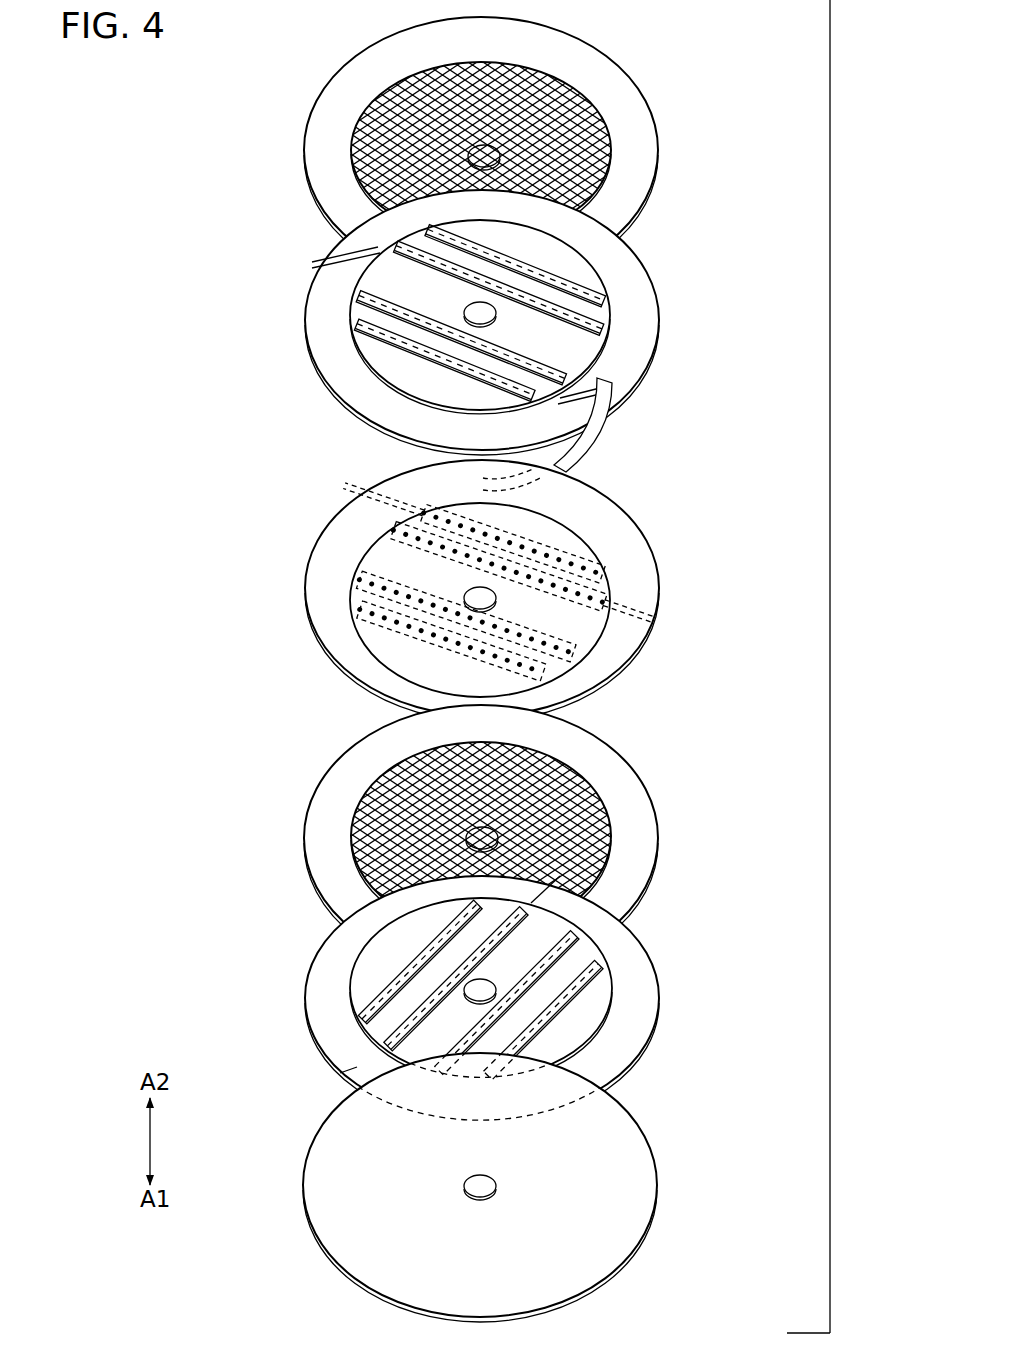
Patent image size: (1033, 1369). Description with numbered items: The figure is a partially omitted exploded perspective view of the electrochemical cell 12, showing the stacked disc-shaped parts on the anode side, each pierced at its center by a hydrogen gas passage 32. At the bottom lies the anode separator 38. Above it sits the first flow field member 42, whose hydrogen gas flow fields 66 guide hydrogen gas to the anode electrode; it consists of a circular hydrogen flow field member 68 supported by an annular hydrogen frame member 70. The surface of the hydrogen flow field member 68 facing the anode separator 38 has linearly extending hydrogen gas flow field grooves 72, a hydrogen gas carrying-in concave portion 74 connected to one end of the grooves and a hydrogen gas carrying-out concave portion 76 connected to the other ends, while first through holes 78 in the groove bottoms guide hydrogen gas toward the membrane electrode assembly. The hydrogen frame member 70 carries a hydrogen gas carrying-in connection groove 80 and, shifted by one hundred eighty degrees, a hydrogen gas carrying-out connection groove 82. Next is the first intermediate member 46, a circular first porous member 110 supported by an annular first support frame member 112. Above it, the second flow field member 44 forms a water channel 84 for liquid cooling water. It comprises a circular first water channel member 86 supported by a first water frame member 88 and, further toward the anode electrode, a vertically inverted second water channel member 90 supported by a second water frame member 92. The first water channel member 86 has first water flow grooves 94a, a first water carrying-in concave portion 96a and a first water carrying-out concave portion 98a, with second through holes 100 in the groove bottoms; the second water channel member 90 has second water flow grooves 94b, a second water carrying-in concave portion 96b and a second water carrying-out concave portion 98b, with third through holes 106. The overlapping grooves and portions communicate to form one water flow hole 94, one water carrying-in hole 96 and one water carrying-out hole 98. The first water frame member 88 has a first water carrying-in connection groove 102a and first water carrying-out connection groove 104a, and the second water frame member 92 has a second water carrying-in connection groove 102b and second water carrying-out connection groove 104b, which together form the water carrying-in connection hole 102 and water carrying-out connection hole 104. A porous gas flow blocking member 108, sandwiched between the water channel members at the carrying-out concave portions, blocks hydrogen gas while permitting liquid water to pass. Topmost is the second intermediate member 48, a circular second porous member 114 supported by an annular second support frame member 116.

The electrochemical cell 12 is at (332, 38).
The hydrogen gas passage 32 is at (485, 312).
The anode separator 38 is at (628, 1165).
The first flow field member 42 is at (462, 995).
The second flow field member 44 is at (473, 358).
The first intermediate member 46 is at (463, 840).
The second intermediate member 48 is at (476, 152).
The hydrogen gas flow field 66 is at (462, 995).
The hydrogen flow field member 68 is at (370, 958).
The hydrogen frame member 70 is at (318, 1000).
The hydrogen gas flow field groove 72 is at (585, 1015).
The hydrogen gas carrying-in concave portion 74 is at (595, 985).
The hydrogen gas carrying-out concave portion 76 is at (362, 1012).
The first through hole 78 is at (598, 1003).
The hydrogen gas carrying-in connection groove 80 is at (590, 905).
The hydrogen gas carrying-out connection groove 82 is at (358, 1073).
The water channel 84 is at (484, 358).
The first water channel member 86 is at (485, 616).
The first water frame member 88 is at (578, 505).
The second water channel member 90 is at (603, 287).
The second water frame member 92 is at (640, 300).
The water flow hole 94 is at (354, 384).
The first water flow groove 94a is at (359, 660).
The second water flow groove 94b is at (360, 343).
The water carrying-in hole 96 is at (373, 344).
The first water carrying-in concave portion 96a is at (360, 572).
The second water carrying-in concave portion 96b is at (355, 302).
The water carrying-out hole 98 is at (594, 296).
The first water carrying-out concave portion 98a is at (600, 600).
The second water carrying-out concave portion 98b is at (598, 332).
The second through hole 100 is at (395, 624).
The water carrying-in connection hole 102 is at (276, 247).
The first water carrying-in connection groove 102a is at (345, 500).
The second water carrying-in connection groove 102b is at (342, 243).
The water carrying-out connection hole 104 is at (689, 389).
The first water carrying-out connection groove 104a is at (640, 630).
The second water carrying-out connection groove 104b is at (620, 382).
The third through hole 106 is at (393, 353).
The gas flow blocking member 108 is at (604, 445).
The first porous member 110 is at (552, 808).
The first support frame member 112 is at (638, 826).
The second porous member 114 is at (552, 128).
The second support frame member 116 is at (634, 143).